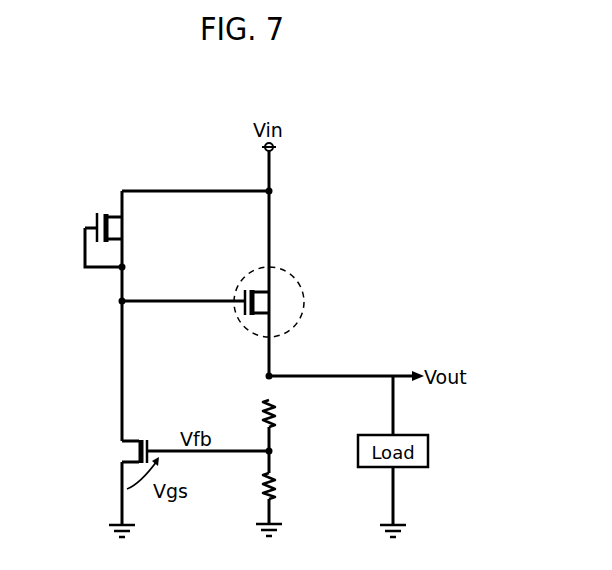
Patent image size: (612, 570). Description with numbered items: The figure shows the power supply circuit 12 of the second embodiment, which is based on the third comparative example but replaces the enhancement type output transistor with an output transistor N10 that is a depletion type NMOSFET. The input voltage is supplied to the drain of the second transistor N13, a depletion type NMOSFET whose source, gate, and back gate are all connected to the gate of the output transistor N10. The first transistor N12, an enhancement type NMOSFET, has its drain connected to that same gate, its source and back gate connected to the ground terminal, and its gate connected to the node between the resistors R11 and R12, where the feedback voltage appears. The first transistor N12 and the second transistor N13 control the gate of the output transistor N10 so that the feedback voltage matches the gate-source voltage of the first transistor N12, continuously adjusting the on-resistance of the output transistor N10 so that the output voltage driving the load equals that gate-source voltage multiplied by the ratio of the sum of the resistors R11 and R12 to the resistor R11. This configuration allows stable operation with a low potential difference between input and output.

The power supply circuit 12 is at (48, 114).
The second transistor N13 is at (128, 230).
The output transistor N10 is at (277, 303).
The first transistor N12 is at (116, 451).
The resistor R12 is at (282, 416).
The resistor R11 is at (282, 488).